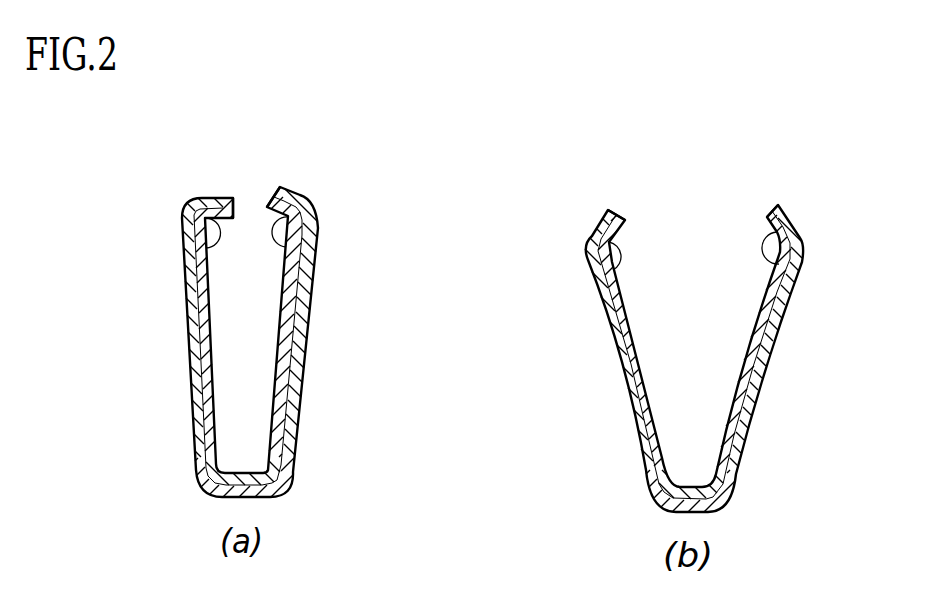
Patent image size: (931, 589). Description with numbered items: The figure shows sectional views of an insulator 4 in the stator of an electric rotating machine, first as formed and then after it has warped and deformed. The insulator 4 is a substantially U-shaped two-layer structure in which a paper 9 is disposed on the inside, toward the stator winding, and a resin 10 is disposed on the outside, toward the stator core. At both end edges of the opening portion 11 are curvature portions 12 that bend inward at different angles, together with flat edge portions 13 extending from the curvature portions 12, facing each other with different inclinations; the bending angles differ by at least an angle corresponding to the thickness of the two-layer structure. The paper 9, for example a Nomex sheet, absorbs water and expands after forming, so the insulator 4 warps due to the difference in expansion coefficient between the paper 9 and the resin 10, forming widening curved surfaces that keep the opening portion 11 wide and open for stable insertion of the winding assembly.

The insulator 4 is at (186, 393).
The paper 9 is at (207, 308).
The resin 10 is at (308, 316).
The opening portion 11 is at (252, 200).
The curvature portions 12 is at (180, 211).
The flat edge portions 13 is at (220, 198).